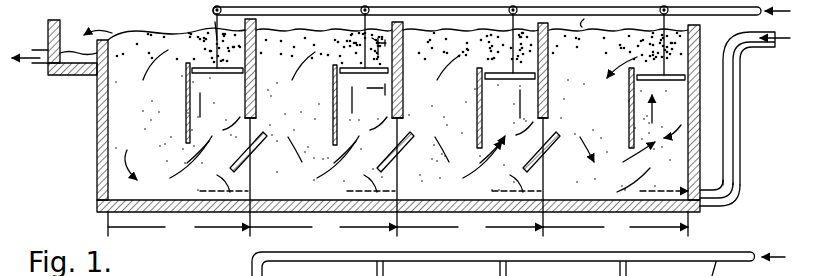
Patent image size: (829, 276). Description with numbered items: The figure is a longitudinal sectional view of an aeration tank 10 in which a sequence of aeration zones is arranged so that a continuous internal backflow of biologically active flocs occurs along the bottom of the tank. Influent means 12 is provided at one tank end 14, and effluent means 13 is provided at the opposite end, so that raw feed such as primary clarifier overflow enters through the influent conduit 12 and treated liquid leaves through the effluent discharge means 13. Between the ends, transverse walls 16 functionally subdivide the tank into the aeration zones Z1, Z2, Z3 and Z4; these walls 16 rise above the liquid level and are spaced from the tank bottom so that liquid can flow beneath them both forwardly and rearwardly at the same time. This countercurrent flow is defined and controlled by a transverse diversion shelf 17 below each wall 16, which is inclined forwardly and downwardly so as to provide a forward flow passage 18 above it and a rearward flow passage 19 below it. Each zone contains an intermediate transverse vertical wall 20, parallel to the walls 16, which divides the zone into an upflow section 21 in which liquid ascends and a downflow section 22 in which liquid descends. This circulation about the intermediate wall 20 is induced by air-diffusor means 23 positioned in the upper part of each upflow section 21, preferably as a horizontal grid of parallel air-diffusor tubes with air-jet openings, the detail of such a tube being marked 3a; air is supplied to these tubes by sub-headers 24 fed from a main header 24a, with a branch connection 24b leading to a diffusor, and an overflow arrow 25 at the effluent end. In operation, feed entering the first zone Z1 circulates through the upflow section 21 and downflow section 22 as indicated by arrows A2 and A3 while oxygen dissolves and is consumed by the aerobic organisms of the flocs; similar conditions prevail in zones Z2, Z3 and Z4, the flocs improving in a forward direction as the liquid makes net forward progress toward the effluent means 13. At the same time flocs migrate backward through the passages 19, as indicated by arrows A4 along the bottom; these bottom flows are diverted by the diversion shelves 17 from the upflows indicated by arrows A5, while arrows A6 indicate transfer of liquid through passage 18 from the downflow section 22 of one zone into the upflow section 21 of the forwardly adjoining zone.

The tank 10 is at (97, 210).
The influent means 12 is at (741, 144).
The effluent means 13 is at (72, 76).
The tank end 14 is at (97, 124).
The transverse wall 16 is at (260, 30).
The diversion shelf 17 is at (265, 133).
The forward flow passage 18 is at (252, 130).
The rearward flow passage 19 is at (252, 165).
The intermediate transverse vertical wall 20 is at (185, 110).
The upflow section 21 is at (440, 112).
The downflow section 22 is at (398, 111).
The air-diffusor means 23 is at (210, 63).
The sub-header 24 is at (213, 9).
The main header 24a is at (463, 15).
The air branch line 24b is at (213, 21).
The overflow direction 25 is at (125, 38).
The dimension 3a is at (376, 62).
The circulation arrow A2 is at (448, 149).
The circulation arrow A3 is at (637, 171).
The backflow arrow A4 is at (441, 184).
The upflow arrow A5 is at (327, 160).
The transfer arrow A6 is at (354, 151).
The first aeration zone Z1 is at (615, 232).
The second aeration zone Z2 is at (470, 232).
The third aeration zone Z3 is at (323, 232).
The fourth aeration zone Z4 is at (179, 232).